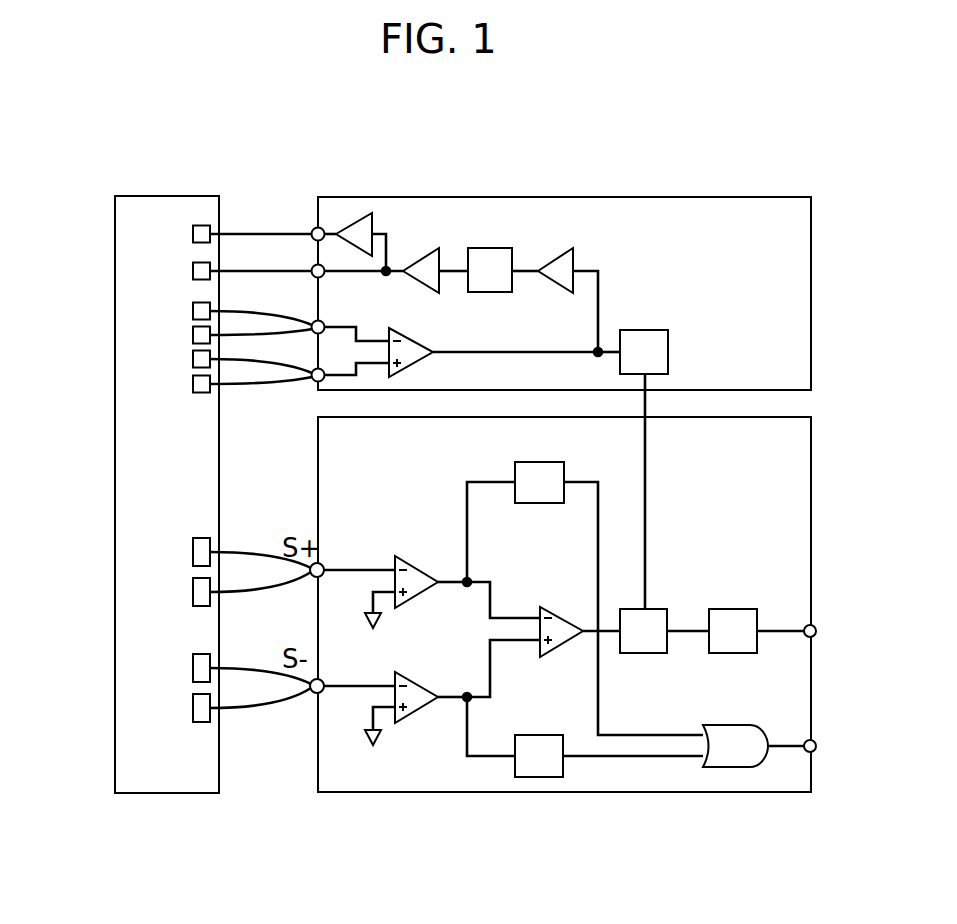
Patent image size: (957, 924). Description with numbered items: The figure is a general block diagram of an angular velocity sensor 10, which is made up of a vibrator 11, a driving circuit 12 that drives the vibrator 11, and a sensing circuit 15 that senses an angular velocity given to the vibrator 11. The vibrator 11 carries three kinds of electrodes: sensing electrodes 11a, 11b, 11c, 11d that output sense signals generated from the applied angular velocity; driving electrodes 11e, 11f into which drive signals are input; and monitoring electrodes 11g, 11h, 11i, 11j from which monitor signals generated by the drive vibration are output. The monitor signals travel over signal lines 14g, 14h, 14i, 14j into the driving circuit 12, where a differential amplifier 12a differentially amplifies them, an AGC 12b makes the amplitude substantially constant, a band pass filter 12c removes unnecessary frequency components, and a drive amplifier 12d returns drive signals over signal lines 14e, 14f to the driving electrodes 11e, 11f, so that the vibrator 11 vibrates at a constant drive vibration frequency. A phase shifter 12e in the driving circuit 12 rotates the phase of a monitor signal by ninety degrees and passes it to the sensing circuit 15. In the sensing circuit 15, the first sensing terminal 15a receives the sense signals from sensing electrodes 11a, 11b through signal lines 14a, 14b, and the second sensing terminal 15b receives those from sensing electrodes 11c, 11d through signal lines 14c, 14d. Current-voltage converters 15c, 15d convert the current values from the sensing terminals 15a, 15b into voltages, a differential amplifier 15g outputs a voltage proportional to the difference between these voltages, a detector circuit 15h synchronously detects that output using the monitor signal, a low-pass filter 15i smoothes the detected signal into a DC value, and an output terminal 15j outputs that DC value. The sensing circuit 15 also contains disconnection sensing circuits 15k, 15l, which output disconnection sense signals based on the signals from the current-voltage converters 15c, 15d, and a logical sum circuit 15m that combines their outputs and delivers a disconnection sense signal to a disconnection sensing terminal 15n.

The angular velocity sensor 10 is at (535, 185).
The vibrator 11 is at (115, 447).
The sensing electrode 11a is at (190, 552).
The sensing electrode 11b is at (190, 594).
The sensing electrode 11c is at (190, 667).
The sensing electrode 11d is at (190, 708).
The driving electrode 11e is at (191, 233).
The driving electrode 11f is at (191, 270).
The monitoring electrode 11g is at (191, 311).
The monitoring electrode 11h is at (191, 335).
The monitoring electrode 11i is at (191, 359).
The monitoring electrode 11j is at (191, 384).
The driving circuit 12 is at (742, 195).
The differential amplifier 12a is at (420, 360).
The AGC 12b is at (555, 250).
The band pass filter 12c is at (490, 248).
The drive amplifier 12d is at (373, 230).
The phase shifter 12e is at (645, 330).
The signal line 14a is at (253, 553).
The signal line 14b is at (238, 595).
The signal line 14c is at (262, 672).
The signal line 14d is at (233, 705).
The signal line 14e is at (237, 233).
The signal line 14f is at (238, 269).
The signal line 14g is at (238, 309).
The signal line 14h is at (228, 337).
The signal line 14i is at (233, 362).
The signal line 14j is at (253, 387).
The sensing circuit 15 is at (812, 483).
The sensing terminal 15a is at (323, 567).
The sensing terminal 15b is at (323, 682).
The current-voltage converter 15c is at (418, 567).
The current-voltage converter 15d is at (418, 682).
The differential amplifier 15g is at (567, 595).
The detector circuit 15h is at (663, 608).
The low-pass filter 15i is at (740, 608).
The output terminal 15j is at (817, 628).
The disconnection sensing circuit 15k is at (542, 462).
The disconnection sensing circuit 15l is at (543, 735).
The logical sum circuit 15m is at (740, 725).
The disconnection sensing terminal 15n is at (817, 745).